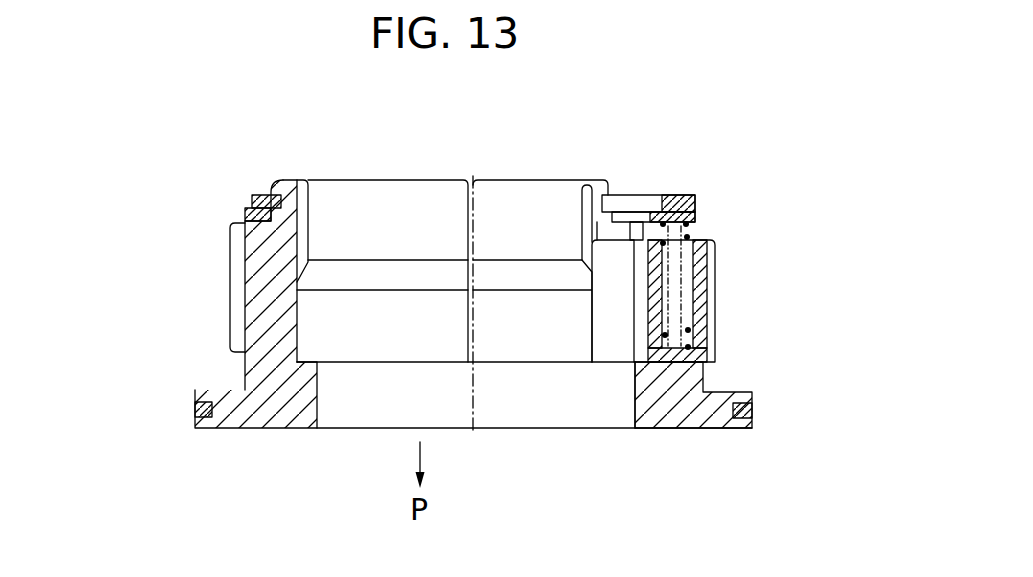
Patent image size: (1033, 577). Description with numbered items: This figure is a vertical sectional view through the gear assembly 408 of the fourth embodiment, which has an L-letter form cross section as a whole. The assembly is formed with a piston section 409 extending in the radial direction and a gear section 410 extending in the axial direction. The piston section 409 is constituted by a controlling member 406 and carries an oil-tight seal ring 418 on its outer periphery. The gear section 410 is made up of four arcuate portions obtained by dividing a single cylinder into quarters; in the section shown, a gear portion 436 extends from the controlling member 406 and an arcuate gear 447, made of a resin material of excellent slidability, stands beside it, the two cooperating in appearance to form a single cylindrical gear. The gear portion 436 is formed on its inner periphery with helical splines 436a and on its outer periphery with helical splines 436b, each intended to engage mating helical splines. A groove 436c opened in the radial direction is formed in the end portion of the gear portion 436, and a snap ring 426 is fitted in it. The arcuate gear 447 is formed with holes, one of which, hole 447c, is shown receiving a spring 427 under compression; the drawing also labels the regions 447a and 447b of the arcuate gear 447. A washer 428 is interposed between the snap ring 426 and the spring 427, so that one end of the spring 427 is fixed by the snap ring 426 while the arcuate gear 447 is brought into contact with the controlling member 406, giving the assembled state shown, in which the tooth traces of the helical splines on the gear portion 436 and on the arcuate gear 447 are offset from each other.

The controlling member 406 is at (682, 382).
The gear assembly 408 is at (516, 162).
The piston section 409 is at (227, 439).
The gear section 410 is at (220, 188).
The oil-tight seal ring 418 is at (195, 408).
The snap ring 426 is at (675, 195).
The spring 427 is at (692, 328).
The washer 428 is at (697, 215).
The gear portion 436 is at (262, 270).
The helical splines 436a is at (302, 217).
The helical splines 436b is at (240, 323).
The groove 436c is at (288, 195).
The arcuate gear 447 is at (610, 340).
The inner wall of holder 447a is at (620, 348).
The bottom of holder 447b is at (712, 347).
The hole 447c is at (696, 268).